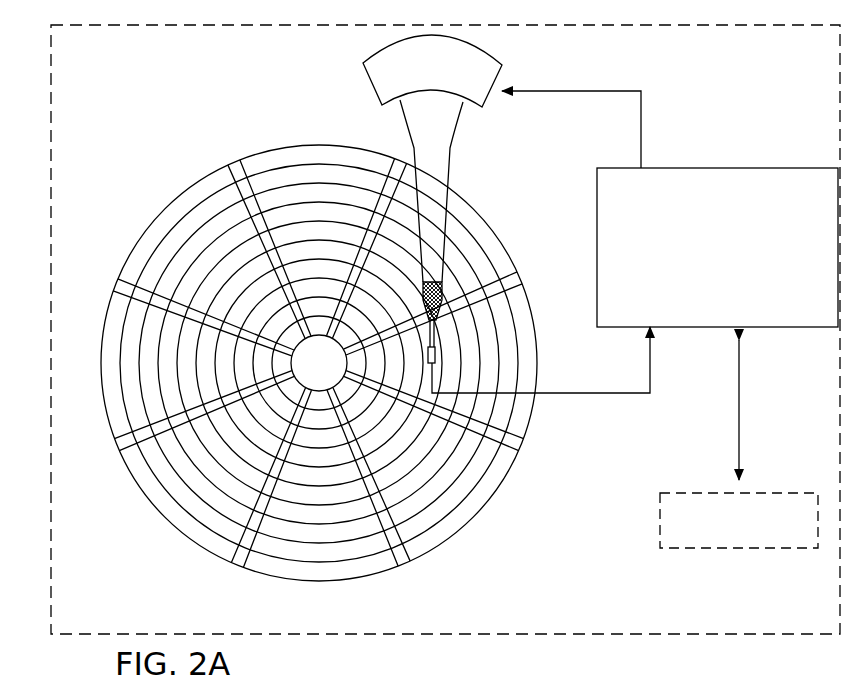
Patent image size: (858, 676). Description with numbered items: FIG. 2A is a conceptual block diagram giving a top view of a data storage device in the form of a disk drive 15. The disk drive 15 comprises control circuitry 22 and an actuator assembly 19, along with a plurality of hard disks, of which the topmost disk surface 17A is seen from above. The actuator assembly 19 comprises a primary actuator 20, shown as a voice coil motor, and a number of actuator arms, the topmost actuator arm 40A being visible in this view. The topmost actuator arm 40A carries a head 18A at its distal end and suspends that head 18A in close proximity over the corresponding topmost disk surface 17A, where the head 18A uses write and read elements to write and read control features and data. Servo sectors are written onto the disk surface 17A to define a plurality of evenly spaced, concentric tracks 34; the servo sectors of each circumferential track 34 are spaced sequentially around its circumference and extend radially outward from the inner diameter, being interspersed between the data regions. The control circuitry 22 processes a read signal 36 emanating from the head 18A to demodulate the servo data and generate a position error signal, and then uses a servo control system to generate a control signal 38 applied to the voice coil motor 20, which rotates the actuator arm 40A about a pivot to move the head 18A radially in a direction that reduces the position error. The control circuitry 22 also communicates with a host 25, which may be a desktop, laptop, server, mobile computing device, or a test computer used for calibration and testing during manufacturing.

The disk drive 15 is at (768, 640).
The topmost disk surface 17A is at (317, 357).
The head 18A is at (441, 366).
The actuator assembly 19 is at (480, 207).
The primary actuator 20 is at (500, 96).
The control circuitry 22 is at (730, 251).
The host 25 is at (779, 533).
The concentric track 34 is at (322, 165).
The read signal 36 is at (632, 395).
The control signal 38 is at (641, 112).
The topmost actuator arm 40A is at (450, 174).